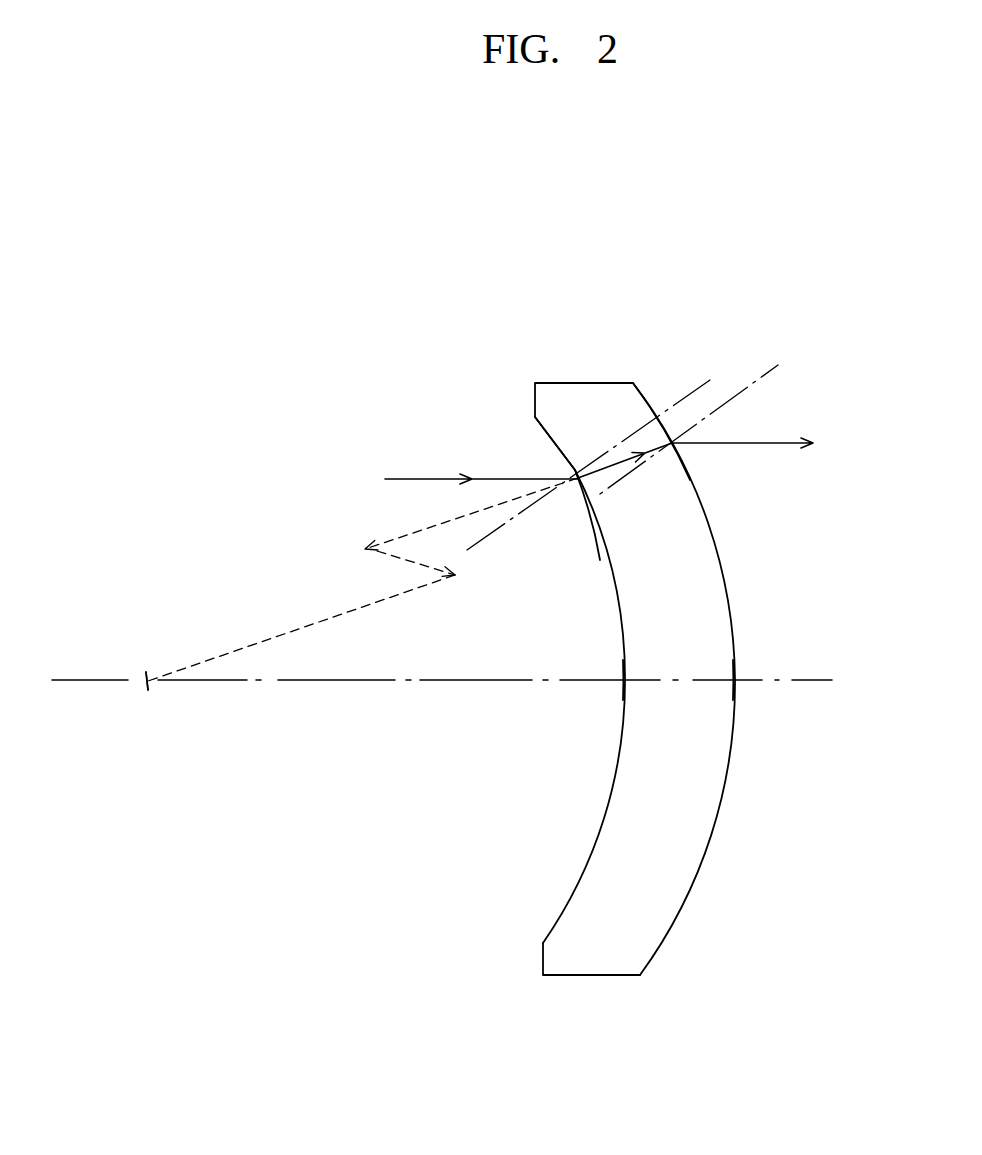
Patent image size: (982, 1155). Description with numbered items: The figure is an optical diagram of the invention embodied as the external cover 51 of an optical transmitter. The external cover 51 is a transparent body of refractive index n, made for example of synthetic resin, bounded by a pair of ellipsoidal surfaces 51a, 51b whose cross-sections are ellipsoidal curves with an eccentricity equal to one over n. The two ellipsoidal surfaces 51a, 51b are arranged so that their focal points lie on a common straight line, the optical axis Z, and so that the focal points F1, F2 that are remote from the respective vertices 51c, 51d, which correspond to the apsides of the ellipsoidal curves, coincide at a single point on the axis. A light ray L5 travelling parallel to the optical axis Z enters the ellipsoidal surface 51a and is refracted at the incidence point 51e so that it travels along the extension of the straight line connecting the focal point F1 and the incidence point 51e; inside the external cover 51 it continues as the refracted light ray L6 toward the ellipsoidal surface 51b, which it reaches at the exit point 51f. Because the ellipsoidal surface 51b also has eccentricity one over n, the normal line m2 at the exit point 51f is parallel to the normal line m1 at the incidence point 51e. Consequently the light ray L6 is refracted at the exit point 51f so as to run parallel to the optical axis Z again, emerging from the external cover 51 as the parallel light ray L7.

The external cover 51 is at (654, 700).
The ellipsoidal surface 51a is at (597, 840).
The ellipsoidal surface 51b is at (712, 833).
The vertex 51c is at (625, 680).
The vertex 51d is at (735, 680).
The incidence point 51e is at (576, 458).
The exit point 51f is at (675, 446).
The light ray L5 is at (398, 478).
The refracted light ray L6 is at (582, 468).
The parallel light ray L7 is at (778, 442).
The normal line m1 is at (707, 388).
The normal line m2 is at (765, 372).
The optical axis Z is at (457, 677).
The focal point F1 is at (150, 673).
The focal point F2 is at (300, 660).